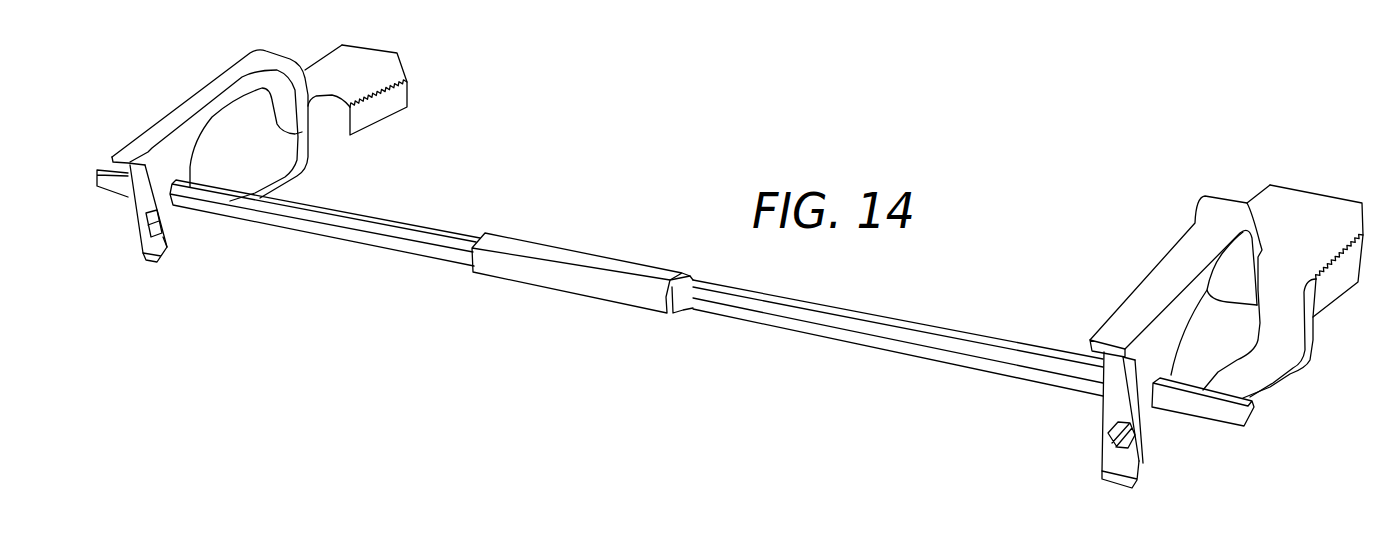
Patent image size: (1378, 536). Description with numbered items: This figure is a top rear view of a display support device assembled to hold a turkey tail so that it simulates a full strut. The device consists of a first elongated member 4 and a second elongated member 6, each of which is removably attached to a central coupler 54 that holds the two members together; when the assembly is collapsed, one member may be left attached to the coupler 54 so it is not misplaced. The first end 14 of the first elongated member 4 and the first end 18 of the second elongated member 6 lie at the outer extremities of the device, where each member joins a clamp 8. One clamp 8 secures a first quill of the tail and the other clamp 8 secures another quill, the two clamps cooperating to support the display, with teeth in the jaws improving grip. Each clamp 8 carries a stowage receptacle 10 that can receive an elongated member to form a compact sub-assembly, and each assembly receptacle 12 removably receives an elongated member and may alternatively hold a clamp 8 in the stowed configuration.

The first elongated member 4 is at (903, 325).
The second elongated member 6 is at (352, 222).
The clamp 8 is at (360, 57).
The stowage receptacle 10 is at (146, 227).
The assembly receptacle 12 is at (178, 203).
The first end 14 is at (1250, 417).
The first end 18 is at (113, 189).
The coupler 54 is at (575, 262).